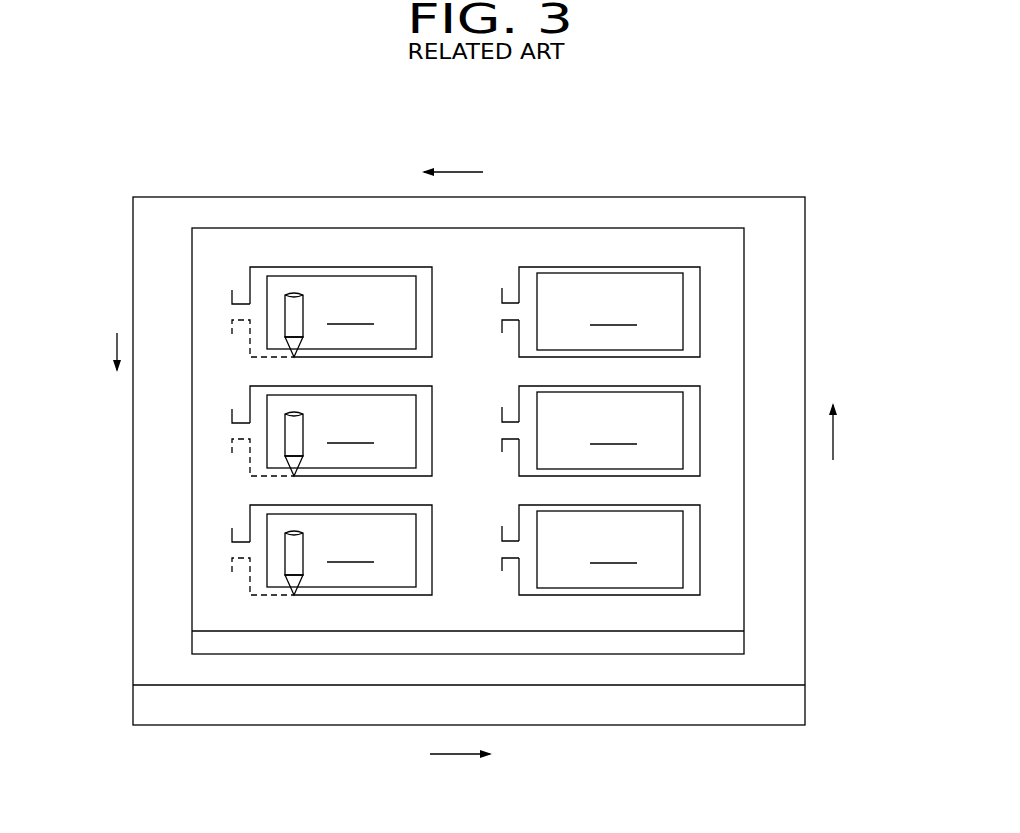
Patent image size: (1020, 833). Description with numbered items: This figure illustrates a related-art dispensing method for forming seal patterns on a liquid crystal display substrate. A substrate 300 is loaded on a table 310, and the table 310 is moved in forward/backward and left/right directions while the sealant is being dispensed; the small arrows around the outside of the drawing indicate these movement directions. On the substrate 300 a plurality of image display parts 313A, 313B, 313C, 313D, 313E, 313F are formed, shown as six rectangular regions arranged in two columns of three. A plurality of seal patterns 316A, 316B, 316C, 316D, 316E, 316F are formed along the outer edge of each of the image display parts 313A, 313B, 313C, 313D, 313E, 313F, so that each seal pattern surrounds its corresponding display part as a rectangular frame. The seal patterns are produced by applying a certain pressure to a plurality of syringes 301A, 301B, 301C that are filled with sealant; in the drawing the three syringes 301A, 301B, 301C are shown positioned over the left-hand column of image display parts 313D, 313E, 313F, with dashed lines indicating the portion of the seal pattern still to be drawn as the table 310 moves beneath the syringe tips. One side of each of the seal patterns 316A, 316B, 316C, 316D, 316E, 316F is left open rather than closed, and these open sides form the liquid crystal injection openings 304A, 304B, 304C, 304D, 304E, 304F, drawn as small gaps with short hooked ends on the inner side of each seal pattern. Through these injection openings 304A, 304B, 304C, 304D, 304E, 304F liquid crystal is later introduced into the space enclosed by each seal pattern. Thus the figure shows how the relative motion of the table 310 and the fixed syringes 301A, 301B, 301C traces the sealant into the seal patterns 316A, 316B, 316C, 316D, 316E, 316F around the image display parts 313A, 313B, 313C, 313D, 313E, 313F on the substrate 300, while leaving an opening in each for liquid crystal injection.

The substrate 300 is at (730, 645).
The table 310 is at (784, 705).
The image display part 313A is at (610, 311).
The image display part 313B is at (610, 430).
The image display part 313C is at (610, 549).
The image display part 313D is at (341, 312).
The image display part 313E is at (341, 431).
The image display part 313F is at (341, 550).
The seal pattern 316A is at (643, 267).
The seal pattern 316B is at (643, 386).
The seal pattern 316C is at (643, 505).
The seal pattern 316D is at (293, 267).
The seal pattern 316E is at (293, 386).
The seal pattern 316F is at (293, 505).
The liquid crystal injection opening 304A is at (496, 310).
The liquid crystal injection opening 304B is at (494, 436).
The liquid crystal injection opening 304C is at (495, 552).
The liquid crystal injection opening 304D is at (228, 309).
The liquid crystal injection opening 304E is at (228, 429).
The liquid crystal injection opening 304F is at (228, 549).
The syringe 301A is at (289, 325).
The syringe 301B is at (289, 444).
The syringe 301C is at (289, 565).